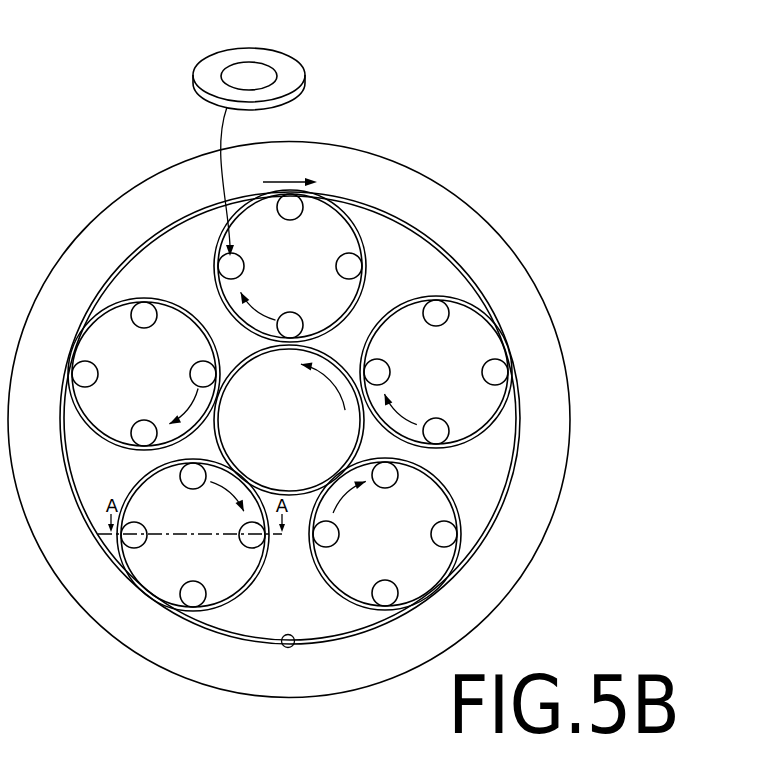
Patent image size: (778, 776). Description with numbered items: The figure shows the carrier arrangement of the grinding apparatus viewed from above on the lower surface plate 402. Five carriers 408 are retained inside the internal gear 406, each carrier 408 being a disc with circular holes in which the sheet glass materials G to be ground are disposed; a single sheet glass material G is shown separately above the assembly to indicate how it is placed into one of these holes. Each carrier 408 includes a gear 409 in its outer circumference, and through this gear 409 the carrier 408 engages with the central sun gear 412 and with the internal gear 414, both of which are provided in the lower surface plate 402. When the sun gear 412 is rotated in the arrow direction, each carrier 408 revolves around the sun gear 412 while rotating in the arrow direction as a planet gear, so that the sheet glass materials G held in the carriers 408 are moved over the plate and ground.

The lower surface plate 402 is at (548, 500).
The internal gear 406 is at (390, 212).
The carrier 408 is at (490, 302).
The gear 409 is at (198, 607).
The sun gear 412 is at (300, 385).
The internal gear 414 is at (282, 642).
The sheet glass material G is at (267, 93).